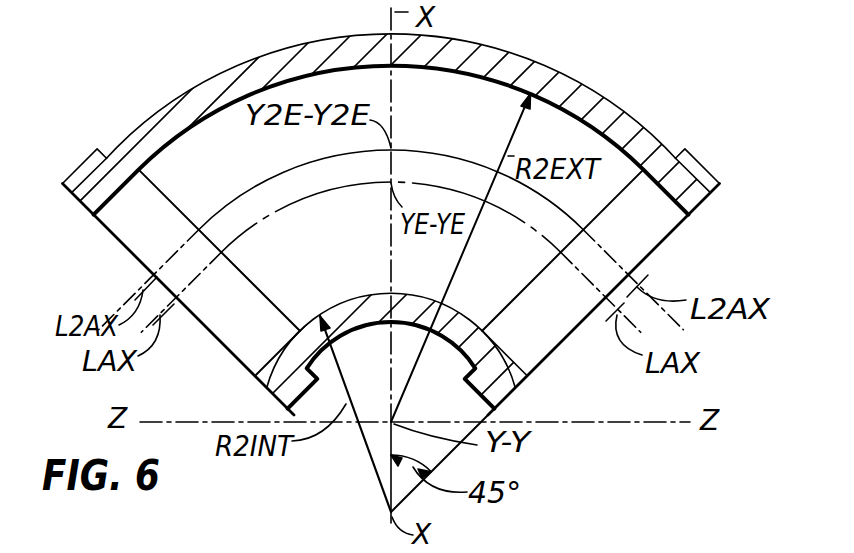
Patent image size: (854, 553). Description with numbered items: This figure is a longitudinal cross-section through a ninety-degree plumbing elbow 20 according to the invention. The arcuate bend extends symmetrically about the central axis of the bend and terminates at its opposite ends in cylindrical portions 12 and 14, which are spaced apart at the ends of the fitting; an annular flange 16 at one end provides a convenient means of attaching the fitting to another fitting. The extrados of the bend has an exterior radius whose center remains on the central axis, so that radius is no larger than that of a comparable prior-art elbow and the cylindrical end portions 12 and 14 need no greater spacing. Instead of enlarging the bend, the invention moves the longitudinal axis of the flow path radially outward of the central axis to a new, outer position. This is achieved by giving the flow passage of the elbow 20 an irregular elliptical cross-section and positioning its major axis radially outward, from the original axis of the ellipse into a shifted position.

The elbow 20 is at (172, 103).
The annular flange 16 is at (702, 168).
The cylindrical portion 14 is at (142, 243).
The cylindrical portion 12 is at (655, 238).